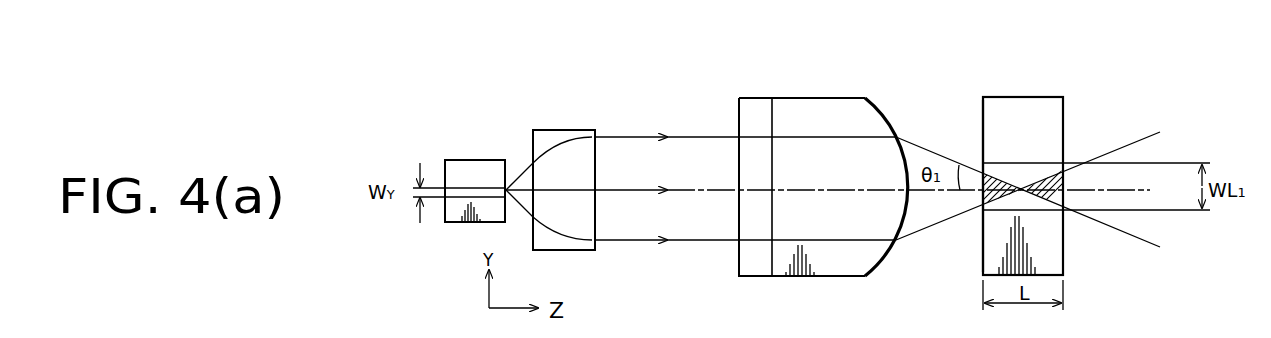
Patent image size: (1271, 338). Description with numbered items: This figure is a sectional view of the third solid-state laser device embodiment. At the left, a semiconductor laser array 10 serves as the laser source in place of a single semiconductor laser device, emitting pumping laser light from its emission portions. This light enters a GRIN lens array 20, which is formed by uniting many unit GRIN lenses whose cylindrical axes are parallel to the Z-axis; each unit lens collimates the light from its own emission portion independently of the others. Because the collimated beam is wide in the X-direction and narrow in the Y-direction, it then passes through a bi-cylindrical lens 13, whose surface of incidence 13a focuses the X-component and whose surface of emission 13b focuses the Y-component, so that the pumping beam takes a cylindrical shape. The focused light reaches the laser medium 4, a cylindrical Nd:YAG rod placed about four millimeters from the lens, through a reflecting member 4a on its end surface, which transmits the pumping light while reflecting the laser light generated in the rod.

The semiconductor laser array 10 is at (445, 161).
The GRIN lens array 20 is at (552, 130).
The bi-cylindrical lens 13 is at (831, 152).
The surface of incidence 13a is at (738, 122).
The surface of emission 13b is at (889, 124).
The laser medium 4 is at (1057, 176).
The reflecting member 4a is at (982, 249).